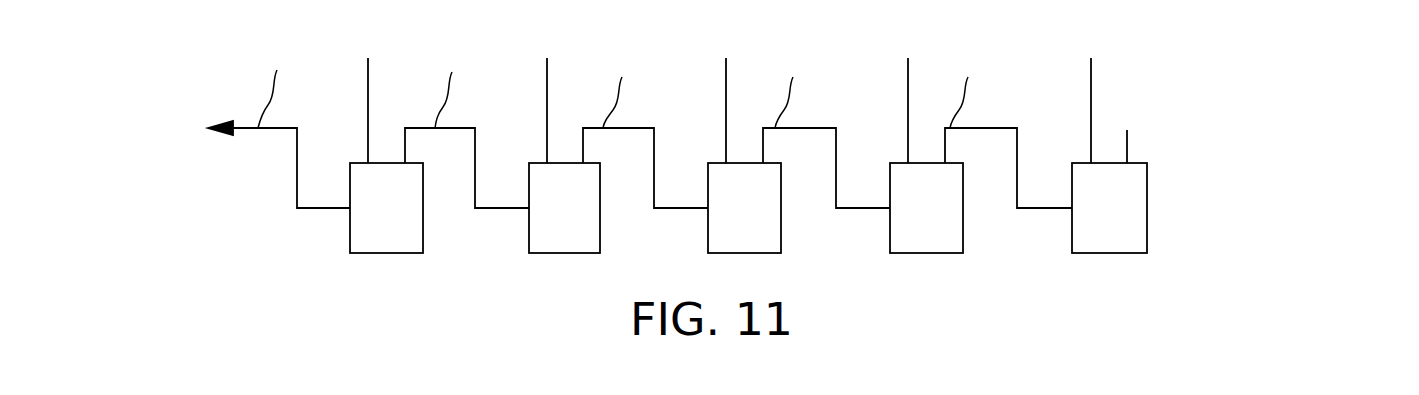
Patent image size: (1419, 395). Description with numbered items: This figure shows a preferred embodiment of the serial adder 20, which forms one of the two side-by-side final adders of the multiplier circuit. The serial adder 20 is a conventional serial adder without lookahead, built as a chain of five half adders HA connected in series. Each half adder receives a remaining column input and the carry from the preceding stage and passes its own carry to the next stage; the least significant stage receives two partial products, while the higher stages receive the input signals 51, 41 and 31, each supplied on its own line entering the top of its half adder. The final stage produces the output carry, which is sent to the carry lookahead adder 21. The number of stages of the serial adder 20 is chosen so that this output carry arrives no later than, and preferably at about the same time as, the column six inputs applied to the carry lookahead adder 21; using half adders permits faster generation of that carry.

The serial adder 20 is at (817, 137).
The carry lookahead adder 21 is at (194, 138).
The input signal l51 51 is at (365, 91).
The input signal k41 41 is at (545, 94).
The input signal j31 31 is at (727, 94).